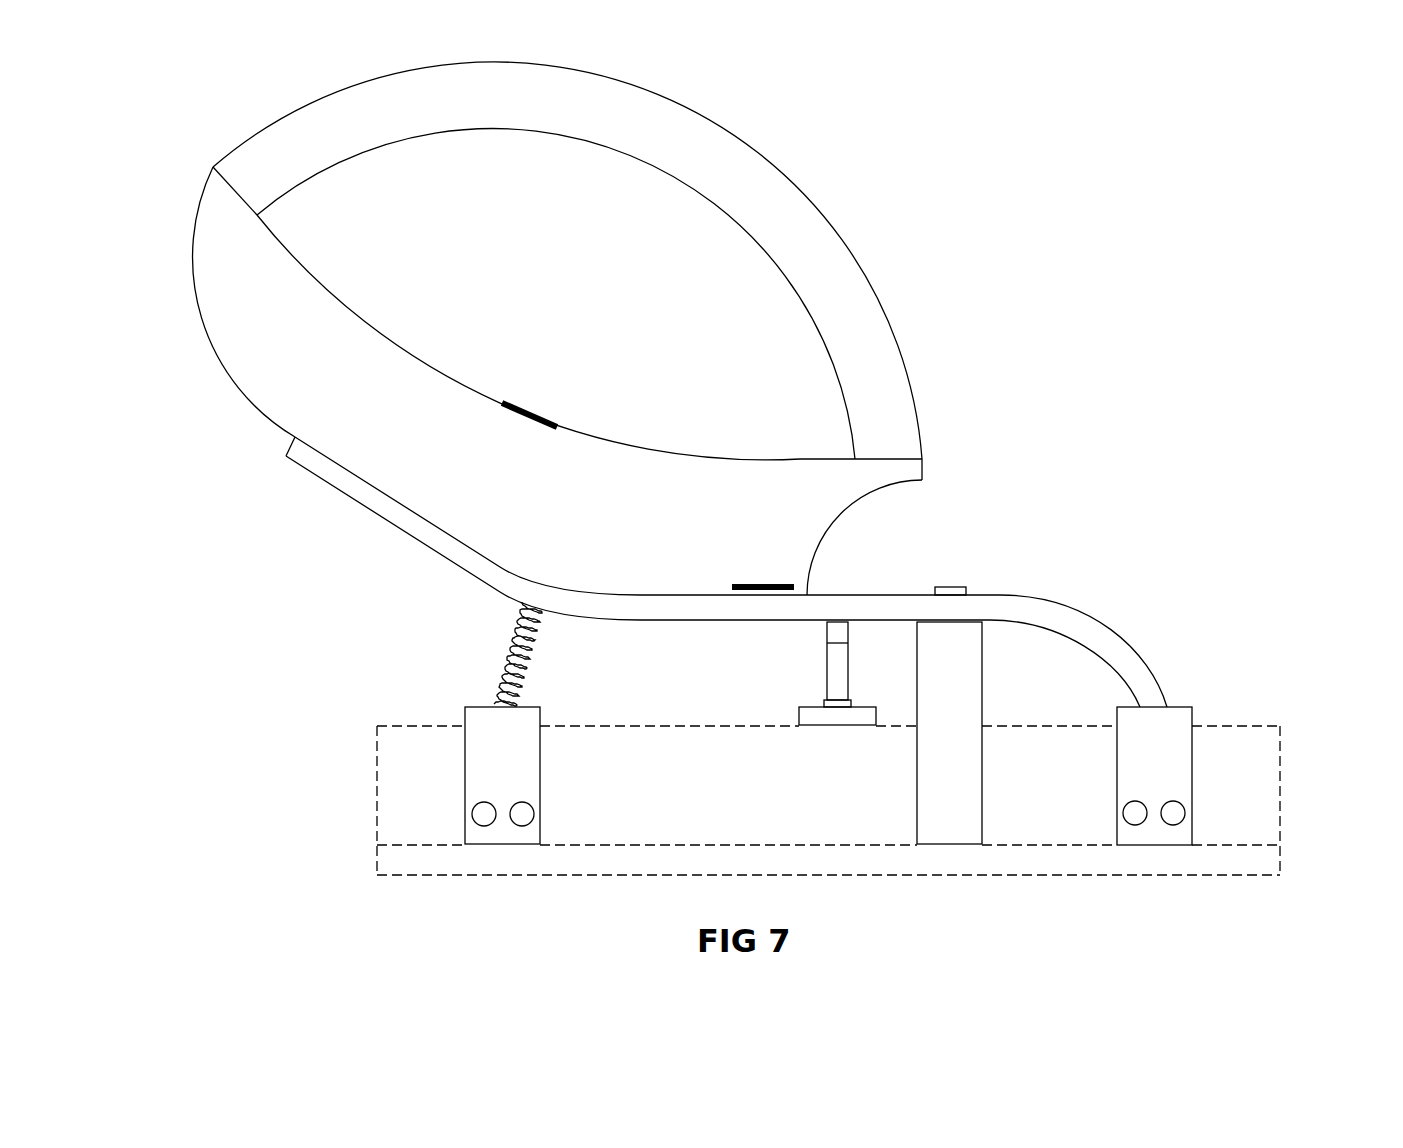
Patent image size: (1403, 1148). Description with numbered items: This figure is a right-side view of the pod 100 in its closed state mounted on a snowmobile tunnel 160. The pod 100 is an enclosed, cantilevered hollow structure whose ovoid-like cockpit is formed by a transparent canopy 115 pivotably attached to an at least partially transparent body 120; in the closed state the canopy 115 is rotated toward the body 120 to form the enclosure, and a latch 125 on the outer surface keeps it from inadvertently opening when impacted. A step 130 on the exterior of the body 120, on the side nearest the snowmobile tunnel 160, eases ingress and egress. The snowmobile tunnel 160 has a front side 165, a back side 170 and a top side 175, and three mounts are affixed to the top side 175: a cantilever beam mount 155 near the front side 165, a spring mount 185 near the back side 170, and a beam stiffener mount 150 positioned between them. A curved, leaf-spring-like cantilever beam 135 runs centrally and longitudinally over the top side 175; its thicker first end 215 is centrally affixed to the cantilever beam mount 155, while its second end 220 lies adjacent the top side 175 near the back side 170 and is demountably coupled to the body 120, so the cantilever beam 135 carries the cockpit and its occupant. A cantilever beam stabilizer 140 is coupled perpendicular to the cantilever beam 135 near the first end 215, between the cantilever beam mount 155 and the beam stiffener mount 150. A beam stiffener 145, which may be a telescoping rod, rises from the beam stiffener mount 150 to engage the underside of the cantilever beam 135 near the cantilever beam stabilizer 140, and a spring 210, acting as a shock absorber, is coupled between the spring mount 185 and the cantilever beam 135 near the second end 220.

The pod 100 is at (1192, 150).
The canopy 115 is at (562, 300).
The body 120 is at (290, 336).
The latch 125 is at (533, 422).
The step 130 is at (752, 584).
The cantilever beam 135 is at (373, 519).
The cantilever beam stabilizer 140 is at (970, 787).
The beam stiffener 145 is at (827, 660).
The beam stiffener mount 150 is at (826, 728).
The cantilever beam mount 155 is at (1174, 786).
The snowmobile tunnel 160 is at (445, 778).
The front side 165 is at (1292, 820).
The back side 170 is at (368, 818).
The top side 175 is at (1270, 714).
The spring mount 185 is at (522, 778).
The spring 210 is at (500, 665).
The first end 215 is at (1180, 699).
The second end 220 is at (280, 447).